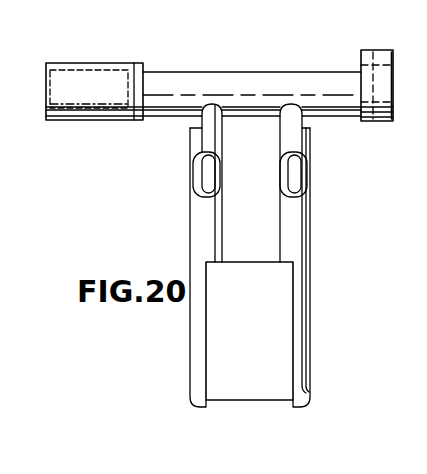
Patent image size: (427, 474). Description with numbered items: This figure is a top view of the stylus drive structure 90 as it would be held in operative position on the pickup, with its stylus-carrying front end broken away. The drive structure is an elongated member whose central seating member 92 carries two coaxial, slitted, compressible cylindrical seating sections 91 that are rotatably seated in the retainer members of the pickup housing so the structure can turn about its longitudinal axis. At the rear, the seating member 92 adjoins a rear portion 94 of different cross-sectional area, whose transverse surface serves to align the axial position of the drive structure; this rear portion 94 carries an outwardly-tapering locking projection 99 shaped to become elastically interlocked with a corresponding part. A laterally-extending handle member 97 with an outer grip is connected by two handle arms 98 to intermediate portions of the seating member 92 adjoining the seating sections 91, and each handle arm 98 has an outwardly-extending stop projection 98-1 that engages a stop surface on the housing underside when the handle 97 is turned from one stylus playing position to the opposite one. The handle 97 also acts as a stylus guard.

The stylus drive structure 90 is at (163, 125).
The cylindrical seating section 91 is at (193, 80).
The seating member 92 is at (253, 109).
The rear portion 94 is at (378, 87).
The handle member 97 is at (282, 355).
The handle arm 98 is at (190, 237).
The stop projection 98-1 is at (203, 174).
The locking projection 99 is at (380, 56).